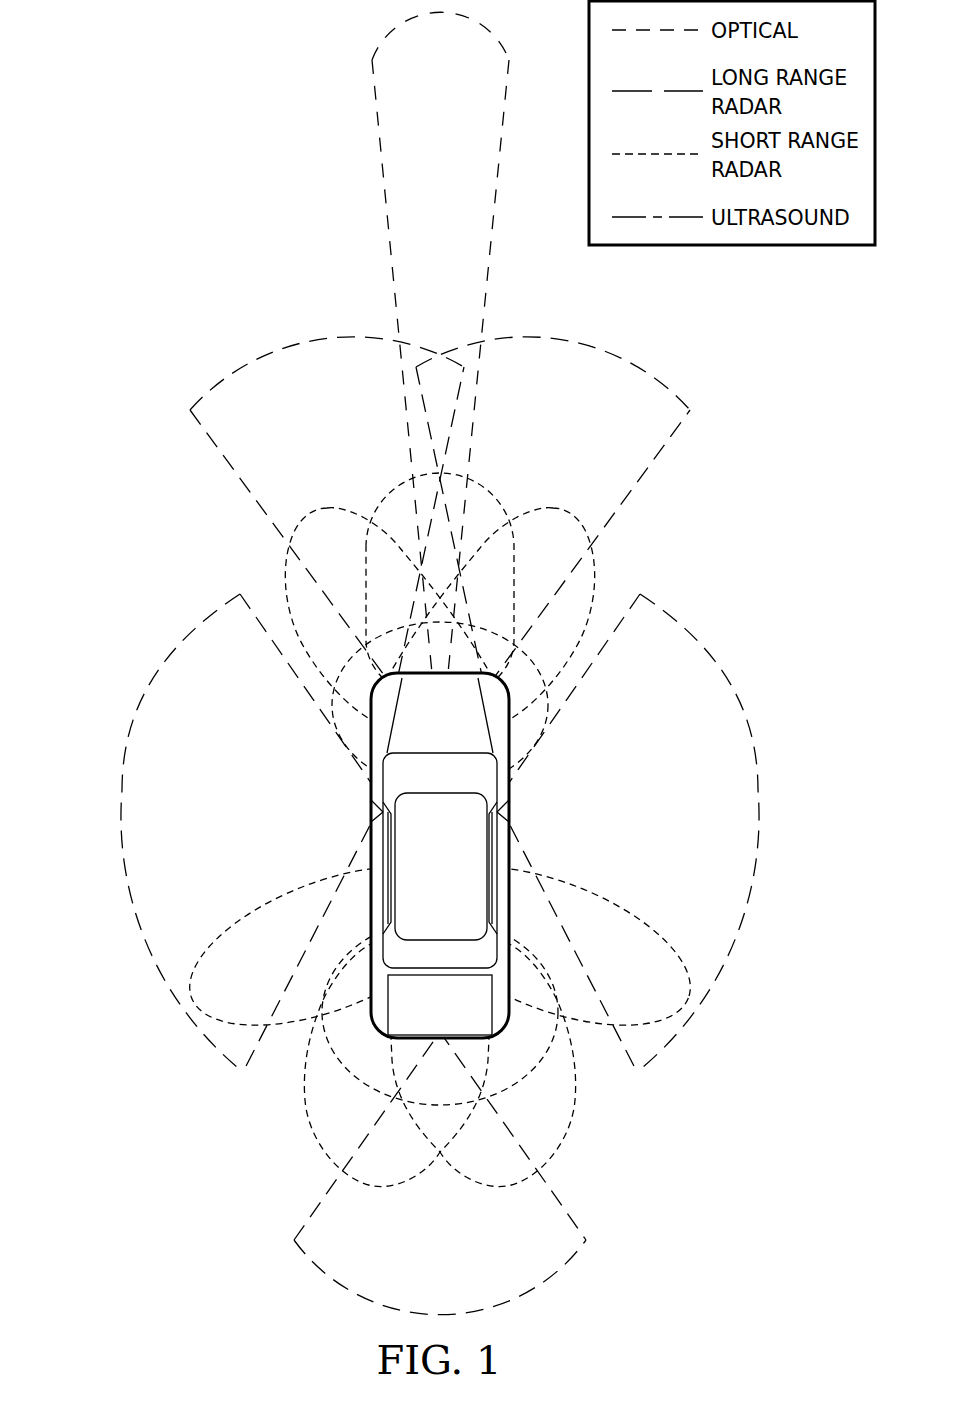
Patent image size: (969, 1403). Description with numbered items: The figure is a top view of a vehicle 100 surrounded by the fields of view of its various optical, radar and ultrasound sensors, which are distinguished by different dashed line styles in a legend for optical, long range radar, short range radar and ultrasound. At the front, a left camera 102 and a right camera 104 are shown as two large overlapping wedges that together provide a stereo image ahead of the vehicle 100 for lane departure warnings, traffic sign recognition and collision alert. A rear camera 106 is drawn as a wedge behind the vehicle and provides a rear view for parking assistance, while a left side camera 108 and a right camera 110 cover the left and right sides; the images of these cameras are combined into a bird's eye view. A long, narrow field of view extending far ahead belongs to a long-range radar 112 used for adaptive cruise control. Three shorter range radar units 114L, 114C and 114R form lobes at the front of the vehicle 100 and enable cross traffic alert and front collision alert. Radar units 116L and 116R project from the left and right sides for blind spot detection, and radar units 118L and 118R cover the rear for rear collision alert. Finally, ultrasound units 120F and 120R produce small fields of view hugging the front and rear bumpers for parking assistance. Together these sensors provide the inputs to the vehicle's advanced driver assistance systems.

The vehicle 100 is at (418, 884).
The left camera 102 is at (306, 342).
The right camera 104 is at (580, 342).
The rear camera 106 is at (346, 1281).
The left side camera 108 is at (121, 780).
The right camera 110 is at (759, 780).
The long-range radar 112 is at (378, 188).
The shorter range radar unit 114L is at (330, 510).
The shorter range radar unit 114C is at (403, 494).
The shorter range radar unit 114R is at (550, 510).
The radar unit 116L is at (272, 903).
The radar unit 116R is at (608, 903).
The radar unit 118L is at (305, 1105).
The radar unit 118R is at (575, 1105).
The ultrasound unit 120F is at (548, 700).
The ultrasound unit 120R is at (566, 997).